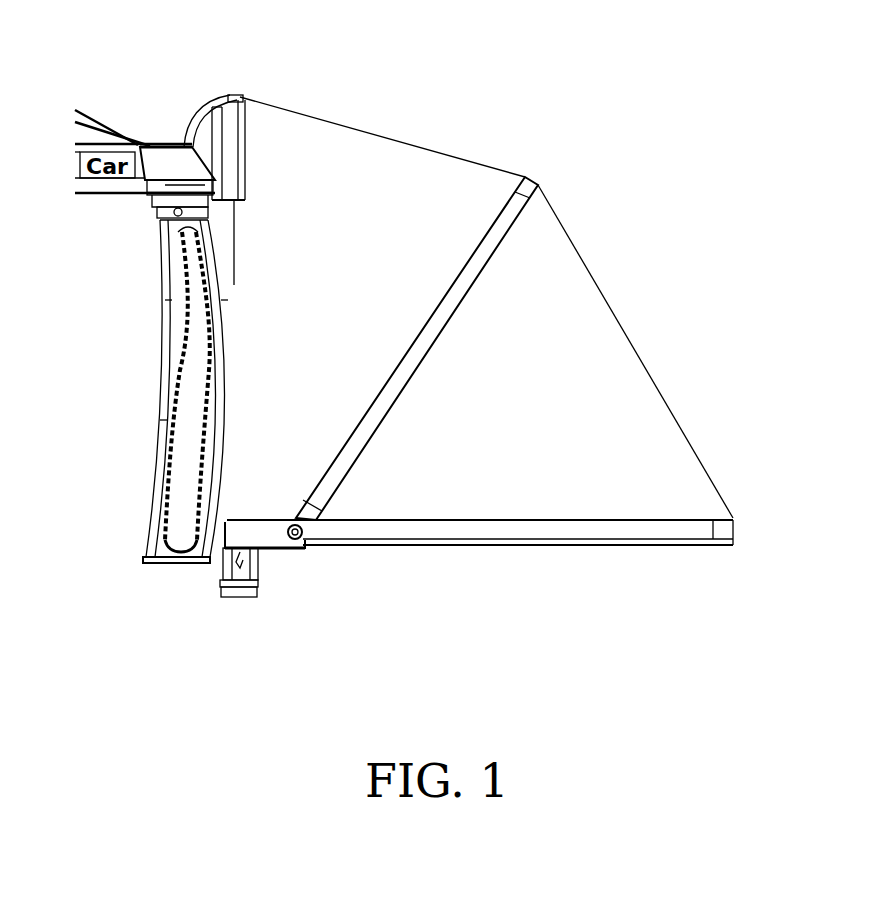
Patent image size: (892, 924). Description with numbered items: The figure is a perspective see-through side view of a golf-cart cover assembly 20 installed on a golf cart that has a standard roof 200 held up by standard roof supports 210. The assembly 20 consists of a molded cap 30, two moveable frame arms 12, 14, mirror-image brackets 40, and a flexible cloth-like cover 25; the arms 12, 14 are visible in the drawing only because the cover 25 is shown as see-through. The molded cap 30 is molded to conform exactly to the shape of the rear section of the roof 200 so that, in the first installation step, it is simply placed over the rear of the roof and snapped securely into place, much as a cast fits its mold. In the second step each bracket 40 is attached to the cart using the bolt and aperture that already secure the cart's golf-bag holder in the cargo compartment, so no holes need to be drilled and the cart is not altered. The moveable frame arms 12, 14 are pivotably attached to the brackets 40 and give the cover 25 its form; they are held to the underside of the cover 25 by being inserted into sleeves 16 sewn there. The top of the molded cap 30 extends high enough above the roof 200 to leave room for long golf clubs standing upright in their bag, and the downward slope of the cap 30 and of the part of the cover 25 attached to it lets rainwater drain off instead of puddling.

The moveable frame arm 12 is at (445, 328).
The moveable frame arm 14 is at (545, 518).
The sleeve 16 is at (318, 510).
The golf-cart cover assembly 20 is at (580, 233).
The cover 25 is at (372, 133).
The molded cap 30 is at (240, 97).
The bracket 40 is at (270, 540).
The roof 200 is at (167, 143).
The roof support 210 is at (170, 303).